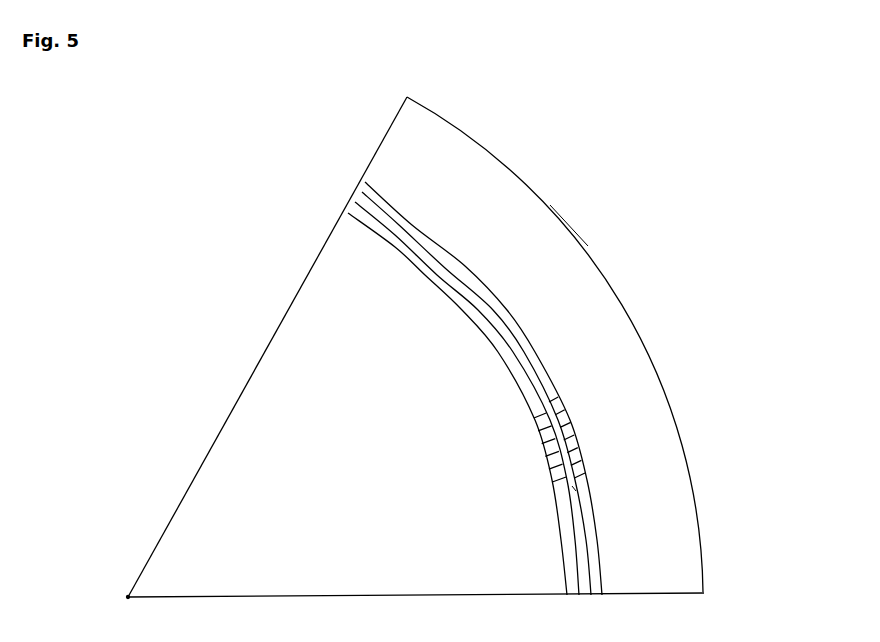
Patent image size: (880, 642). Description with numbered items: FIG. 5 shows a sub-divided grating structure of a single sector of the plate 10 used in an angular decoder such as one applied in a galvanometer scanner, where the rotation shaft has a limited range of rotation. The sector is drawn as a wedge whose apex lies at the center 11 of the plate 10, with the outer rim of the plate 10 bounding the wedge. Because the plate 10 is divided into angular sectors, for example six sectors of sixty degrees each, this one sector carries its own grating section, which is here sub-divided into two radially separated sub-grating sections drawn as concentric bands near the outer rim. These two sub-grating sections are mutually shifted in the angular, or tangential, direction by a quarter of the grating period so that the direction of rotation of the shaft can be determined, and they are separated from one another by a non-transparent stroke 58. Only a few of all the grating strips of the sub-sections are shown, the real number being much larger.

The plate 10 is at (547, 198).
The center of plate 11 is at (111, 599).
The non-transparent stroke 58 is at (572, 486).